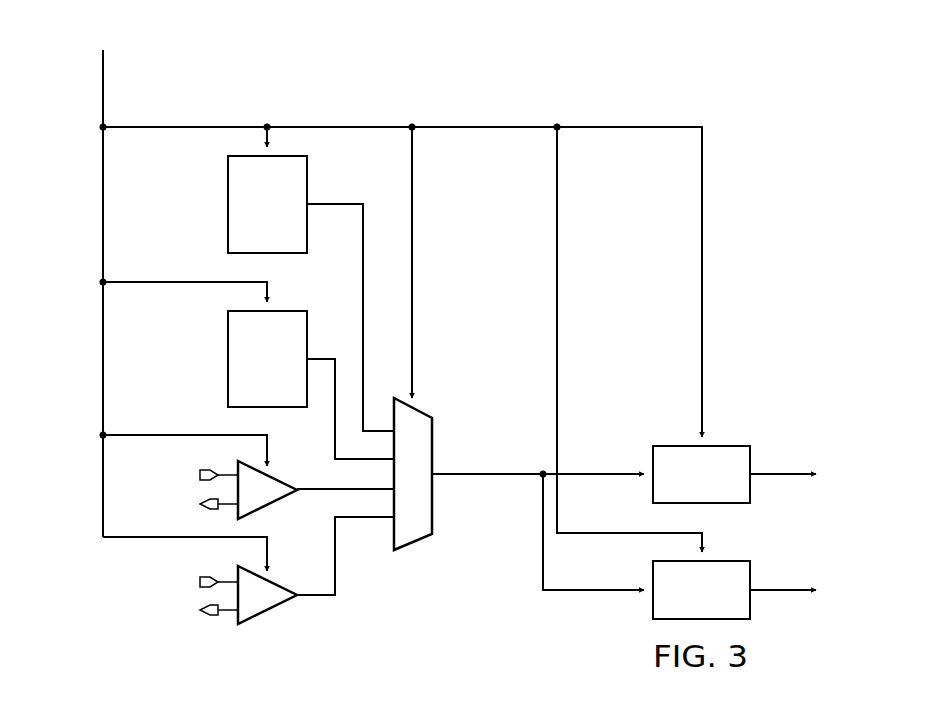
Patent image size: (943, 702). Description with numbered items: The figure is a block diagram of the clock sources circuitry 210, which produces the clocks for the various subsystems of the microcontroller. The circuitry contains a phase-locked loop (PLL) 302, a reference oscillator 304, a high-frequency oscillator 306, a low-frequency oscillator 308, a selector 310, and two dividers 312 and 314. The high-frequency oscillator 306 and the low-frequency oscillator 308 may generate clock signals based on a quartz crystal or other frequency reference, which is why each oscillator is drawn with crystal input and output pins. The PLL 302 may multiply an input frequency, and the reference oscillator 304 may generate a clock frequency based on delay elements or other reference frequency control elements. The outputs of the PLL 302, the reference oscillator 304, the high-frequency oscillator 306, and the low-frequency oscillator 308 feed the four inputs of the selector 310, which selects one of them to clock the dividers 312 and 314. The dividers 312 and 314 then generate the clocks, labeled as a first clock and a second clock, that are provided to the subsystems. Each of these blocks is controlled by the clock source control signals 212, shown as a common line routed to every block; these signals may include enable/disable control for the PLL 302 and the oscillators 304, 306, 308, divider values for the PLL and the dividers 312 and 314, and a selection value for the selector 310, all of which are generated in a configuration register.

The clock sources circuitry 210 is at (518, 86).
The clock source control signals 212 is at (103, 90).
The phase-locked loop (PLL) 302 is at (228, 196).
The reference oscillator 304 is at (228, 350).
The high-frequency oscillator 306 is at (275, 501).
The low-frequency oscillator 308 is at (275, 606).
The selector 310 is at (432, 497).
The divider 312 is at (721, 503).
The divider 314 is at (750, 603).